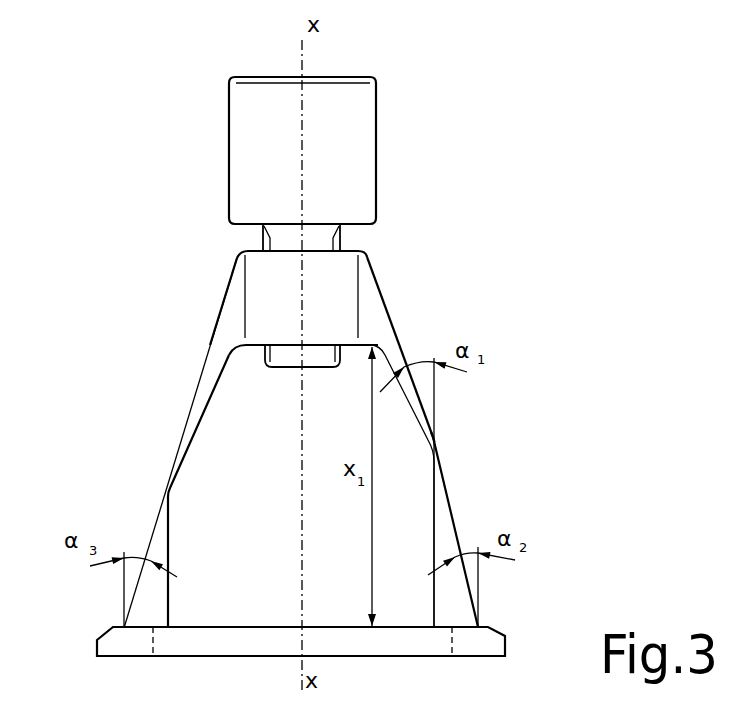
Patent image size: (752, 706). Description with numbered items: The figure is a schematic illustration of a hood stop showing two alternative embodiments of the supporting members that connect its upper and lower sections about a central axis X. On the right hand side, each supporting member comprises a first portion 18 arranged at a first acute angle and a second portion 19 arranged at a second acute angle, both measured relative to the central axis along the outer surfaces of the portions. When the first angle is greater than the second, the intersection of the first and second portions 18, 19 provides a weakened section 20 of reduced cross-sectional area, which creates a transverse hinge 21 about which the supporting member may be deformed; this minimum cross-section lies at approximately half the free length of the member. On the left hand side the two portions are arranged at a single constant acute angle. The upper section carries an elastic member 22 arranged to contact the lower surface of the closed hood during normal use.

The first portion 18 is at (393, 353).
The second portion 19 is at (448, 522).
The weakened section 20 is at (440, 437).
The transverse hinge 21 is at (178, 495).
The elastic member 22 is at (245, 145).